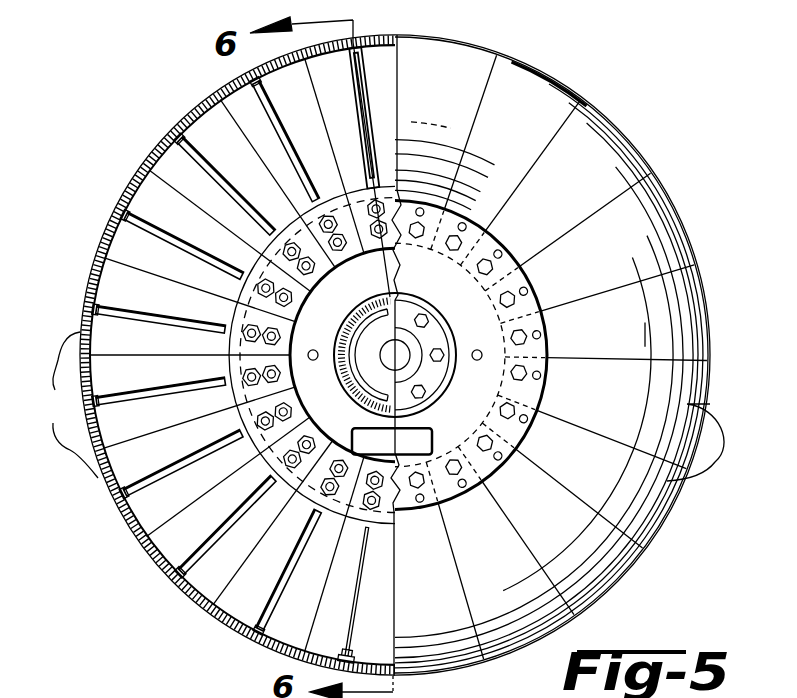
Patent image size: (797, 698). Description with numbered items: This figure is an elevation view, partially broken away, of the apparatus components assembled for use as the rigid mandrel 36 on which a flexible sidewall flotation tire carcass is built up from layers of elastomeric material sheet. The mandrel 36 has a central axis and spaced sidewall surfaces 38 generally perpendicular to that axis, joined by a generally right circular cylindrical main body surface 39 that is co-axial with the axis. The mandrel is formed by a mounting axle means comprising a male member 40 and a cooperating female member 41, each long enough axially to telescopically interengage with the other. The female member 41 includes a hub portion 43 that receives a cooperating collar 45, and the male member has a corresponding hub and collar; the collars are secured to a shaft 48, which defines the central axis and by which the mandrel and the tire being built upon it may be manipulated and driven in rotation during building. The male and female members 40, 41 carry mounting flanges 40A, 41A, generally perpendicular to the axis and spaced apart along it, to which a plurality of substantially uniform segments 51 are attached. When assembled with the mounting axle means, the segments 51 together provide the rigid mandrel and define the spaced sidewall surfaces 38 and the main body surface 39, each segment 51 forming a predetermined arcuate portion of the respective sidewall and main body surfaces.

The rigid mandrel 36 is at (760, 133).
The sidewall surfaces 38 is at (608, 243).
The main body surface 39 is at (703, 288).
The male member 40 is at (348, 326).
The mounting flange 40A is at (240, 364).
The female member 41 is at (344, 400).
The mounting flange 41A is at (544, 375).
The hub portion 43 is at (404, 350).
The collar 45 is at (420, 388).
The shaft 48 is at (430, 330).
The segments 51 is at (80, 390).